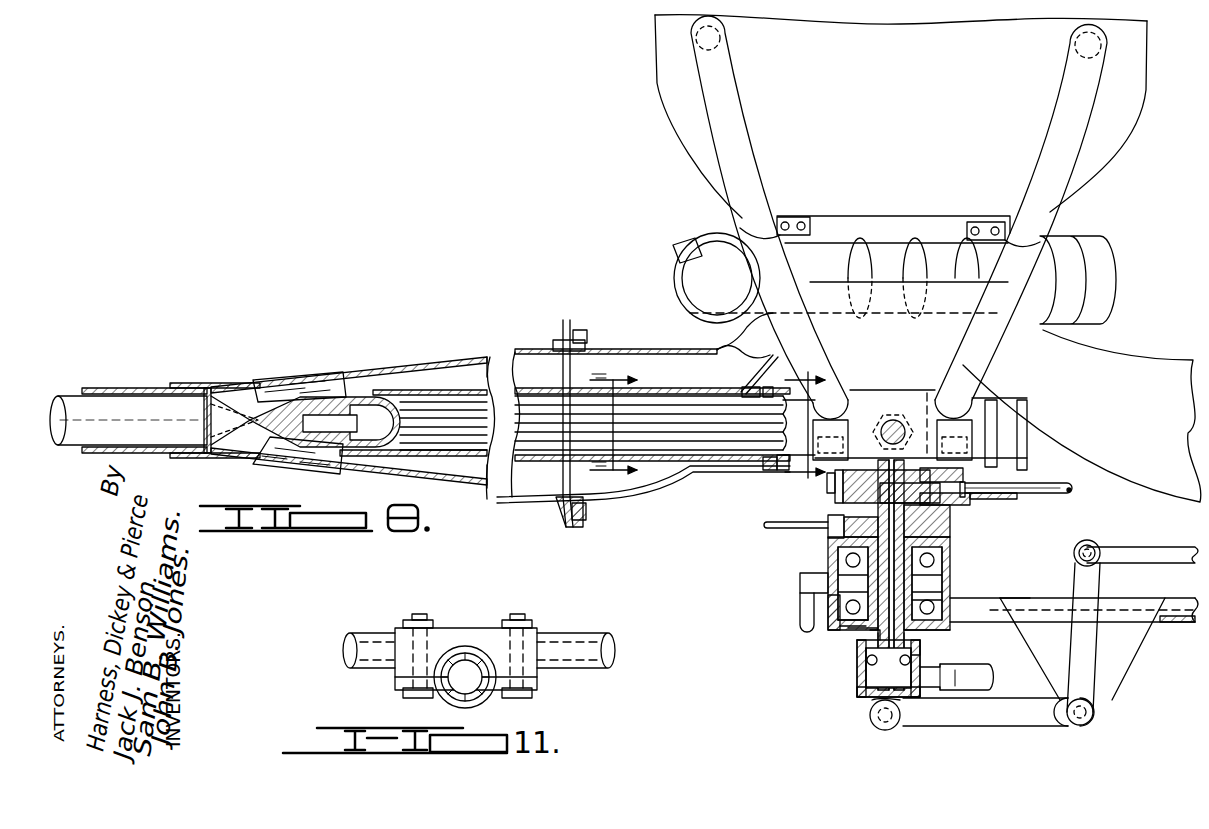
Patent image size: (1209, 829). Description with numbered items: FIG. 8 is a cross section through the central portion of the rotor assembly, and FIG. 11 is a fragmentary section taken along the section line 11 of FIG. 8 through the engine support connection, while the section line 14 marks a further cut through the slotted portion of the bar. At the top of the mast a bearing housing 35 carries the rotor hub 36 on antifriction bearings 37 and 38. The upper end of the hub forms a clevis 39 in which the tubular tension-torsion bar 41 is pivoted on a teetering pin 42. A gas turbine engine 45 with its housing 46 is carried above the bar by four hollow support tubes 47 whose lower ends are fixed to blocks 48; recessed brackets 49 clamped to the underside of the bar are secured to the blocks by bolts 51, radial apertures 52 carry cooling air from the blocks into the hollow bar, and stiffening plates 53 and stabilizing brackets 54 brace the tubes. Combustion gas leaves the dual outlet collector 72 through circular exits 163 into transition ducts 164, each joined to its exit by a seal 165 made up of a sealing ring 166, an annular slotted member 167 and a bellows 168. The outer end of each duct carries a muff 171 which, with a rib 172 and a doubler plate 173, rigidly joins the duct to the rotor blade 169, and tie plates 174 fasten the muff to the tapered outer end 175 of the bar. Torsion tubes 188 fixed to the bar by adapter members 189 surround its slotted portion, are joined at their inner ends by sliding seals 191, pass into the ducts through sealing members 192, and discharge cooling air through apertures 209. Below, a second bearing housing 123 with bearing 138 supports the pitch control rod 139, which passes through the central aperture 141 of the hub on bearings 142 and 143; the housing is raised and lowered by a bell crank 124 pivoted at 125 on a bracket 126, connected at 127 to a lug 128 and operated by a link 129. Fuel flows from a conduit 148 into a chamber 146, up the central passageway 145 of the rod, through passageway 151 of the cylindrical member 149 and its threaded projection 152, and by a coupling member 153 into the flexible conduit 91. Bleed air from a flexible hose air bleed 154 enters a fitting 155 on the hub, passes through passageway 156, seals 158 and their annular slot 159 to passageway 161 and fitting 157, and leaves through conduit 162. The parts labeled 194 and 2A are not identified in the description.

In FIG. 8, the rotor blade 169 is at (70, 442).
In FIG. 8, the doubler plate 173 is at (140, 390).
In FIG. 8, the rib 172 is at (207, 388).
In FIG. 8, the muff 171 is at (233, 387).
In FIG. 8, the tapered outer end of tension-torsion bar 175 is at (282, 416).
In FIG. 8, the tie plates 174 is at (330, 373).
In FIG. 8, the adapter members 189 is at (383, 369).
In FIG. 8, the apertures 209 is at (428, 390).
In FIG. 8, the torsion tubes 188 is at (470, 392).
In FIG. 8, the transition ducts 164 is at (473, 357).
In FIG. 8, the circular exits 163 is at (593, 348).
In FIG. 8, the bellows 168 is at (563, 338).
In FIG. 8, the sealing ring 166 is at (583, 340).
In FIG. 8, the seal 165 is at (577, 534).
In FIG. 8, the annular slotted member 167 is at (586, 515).
In FIG. 8, the section line 14— 14 is at (626, 432).
In FIG. 8, the section line 11— 11 is at (822, 380).
In FIG. 8, the sealing members 192 is at (768, 470).
In FIG. 8, the sliding seals 191 is at (782, 472).
In FIG. 8, the cylindrical member 149 is at (843, 480).
In FIG. 8, the passageway 151 is at (886, 479).
In FIG. 8, the threaded projection 152 is at (960, 478).
In FIG. 8, the flexible conduit 91 is at (1063, 483).
In FIG. 8, the threaded coupling member 153 is at (1018, 506).
In FIG. 8, the flexible hose air bleed 154 is at (767, 525).
In FIG. 8, the block 194 is at (830, 530).
In FIG. 8, the fitting 155 is at (830, 543).
In FIG. 8, the antifriction bearing 37 is at (833, 558).
In FIG. 8, the passageway 156 is at (802, 584).
In FIG. 8, the fitting 157 is at (808, 598).
In FIG. 8, the seals 158 is at (830, 608).
In FIG. 8, the conduit 162 is at (835, 625).
In FIG. 8, the passageway 161 is at (865, 633).
In FIG. 8, the antifriction bearing 38 is at (877, 640).
In FIG. 8, the central aperture 141 is at (903, 540).
In FIG. 8, the rotor hub 36 is at (880, 640).
In FIG. 8, the bearing 143 is at (925, 527).
In FIG. 8, the pitch control rod 139 is at (952, 560).
In FIG. 8, the bearing housing 35 is at (938, 556).
In FIG. 8, the annular slot 159 is at (950, 583).
In FIG. 8, the central passageway 145 is at (950, 600).
In FIG. 8, the bearing 142 is at (950, 612).
In FIG. 8, the linkage 2A is at (1022, 570).
In FIG. 8, the bearing housing 123 is at (922, 652).
In FIG. 8, the antifriction bearing 138 is at (877, 657).
In FIG. 8, the chamber 146 is at (872, 680).
In FIG. 8, the lug 128 is at (875, 697).
In FIG. 8, the pivot connection 127 is at (875, 727).
In FIG. 8, the conduit 148 is at (992, 660).
In FIG. 8, the bell crank 124 is at (950, 716).
In FIG. 8, the pivot 125 is at (1094, 708).
In FIG. 8, the bracket 126 is at (1122, 652).
In FIG. 8, the link 129 is at (1118, 550).
In FIG. 8, the dual outlet collector 72 is at (1107, 363).
In FIG. 8, the tension-torsion bar 41 is at (860, 407).
In FIG. 11, the tension-torsion bar 41 is at (481, 650).
In FIG. 8, the pin 42 is at (902, 426).
In FIG. 8, the clevis 39 is at (995, 407).
In FIG. 8, the support tubes 47 is at (740, 145).
In FIG. 11, the support tubes 47 is at (372, 636).
In FIG. 8, the gas turbine engine 45 is at (1143, 97).
In FIG. 8, the engine housing 46 is at (1110, 133).
In FIG. 8, the stiffening plates 53 is at (897, 263).
In FIG. 8, the stabilizing brackets 54 is at (750, 230).
In FIG. 11, the blocks 48 is at (437, 636).
In FIG. 11, the radial apertures 52 is at (470, 648).
In FIG. 11, the bolts 51 is at (400, 698).
In FIG. 11, the recessed brackets 49 is at (487, 708).